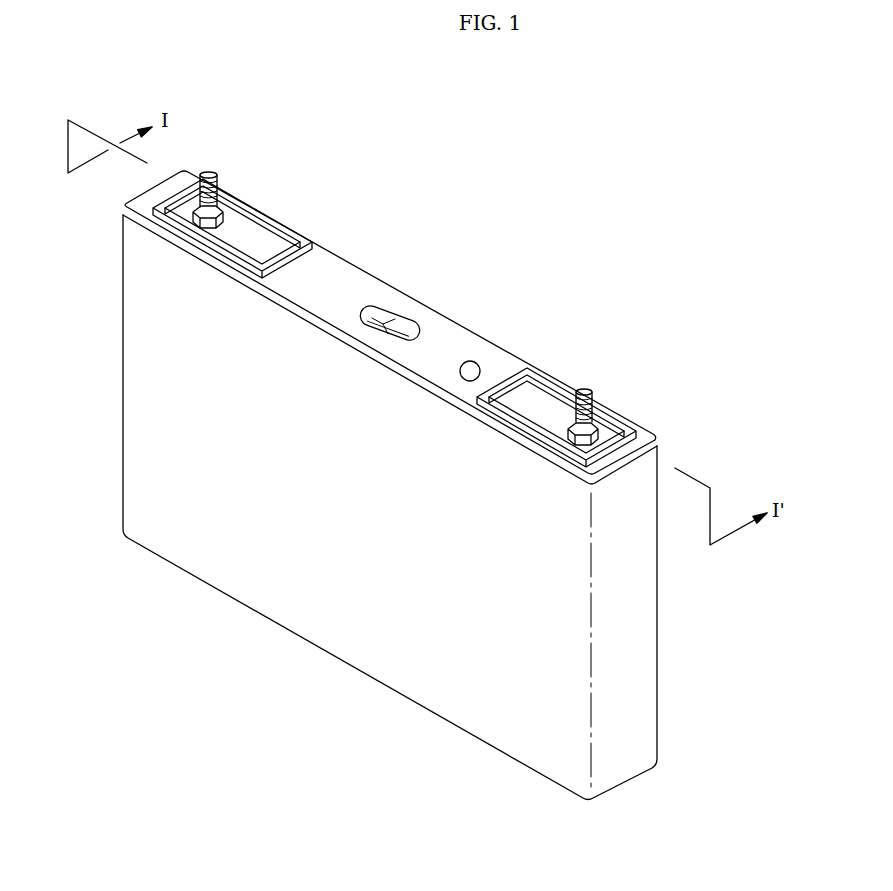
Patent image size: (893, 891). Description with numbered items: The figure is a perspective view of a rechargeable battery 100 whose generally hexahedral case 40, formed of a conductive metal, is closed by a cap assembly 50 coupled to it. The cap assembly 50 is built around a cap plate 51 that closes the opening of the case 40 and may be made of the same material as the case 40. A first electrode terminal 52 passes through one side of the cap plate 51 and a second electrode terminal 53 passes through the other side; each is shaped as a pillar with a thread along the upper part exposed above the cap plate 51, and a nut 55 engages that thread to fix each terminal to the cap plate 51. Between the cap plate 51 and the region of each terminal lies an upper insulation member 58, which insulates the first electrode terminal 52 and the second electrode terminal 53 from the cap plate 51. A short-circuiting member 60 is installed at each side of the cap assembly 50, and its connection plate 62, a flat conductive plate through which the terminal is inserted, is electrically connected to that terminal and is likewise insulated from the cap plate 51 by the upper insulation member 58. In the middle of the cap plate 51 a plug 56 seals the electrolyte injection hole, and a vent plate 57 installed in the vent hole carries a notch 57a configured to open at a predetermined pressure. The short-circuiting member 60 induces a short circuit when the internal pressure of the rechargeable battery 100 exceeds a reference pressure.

The rechargeable battery 100 is at (432, 150).
The case 40 is at (340, 640).
The cap assembly 50 is at (468, 332).
The cap plate 51 is at (355, 280).
The first electrode terminal 52 is at (582, 392).
The second electrode terminal 53 is at (207, 172).
The nut 55 is at (185, 229).
The plug 56 is at (475, 364).
The vent plate 57 is at (397, 306).
The notch 57a is at (400, 325).
The upper insulation member 58 is at (300, 240).
The short-circuiting member 60 is at (277, 238).
The connection plate 62 is at (240, 228).